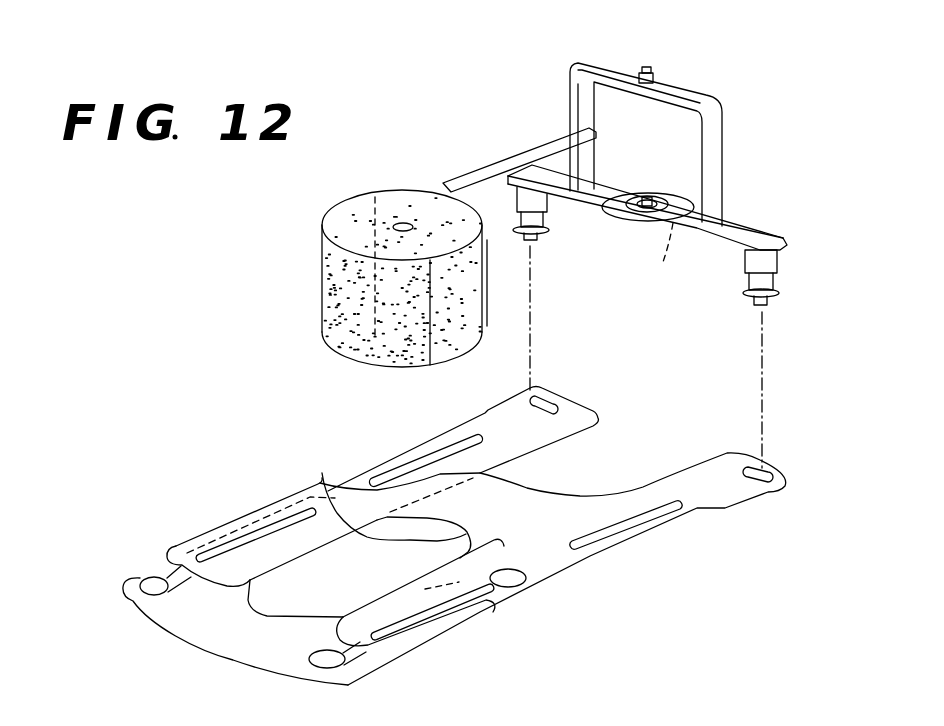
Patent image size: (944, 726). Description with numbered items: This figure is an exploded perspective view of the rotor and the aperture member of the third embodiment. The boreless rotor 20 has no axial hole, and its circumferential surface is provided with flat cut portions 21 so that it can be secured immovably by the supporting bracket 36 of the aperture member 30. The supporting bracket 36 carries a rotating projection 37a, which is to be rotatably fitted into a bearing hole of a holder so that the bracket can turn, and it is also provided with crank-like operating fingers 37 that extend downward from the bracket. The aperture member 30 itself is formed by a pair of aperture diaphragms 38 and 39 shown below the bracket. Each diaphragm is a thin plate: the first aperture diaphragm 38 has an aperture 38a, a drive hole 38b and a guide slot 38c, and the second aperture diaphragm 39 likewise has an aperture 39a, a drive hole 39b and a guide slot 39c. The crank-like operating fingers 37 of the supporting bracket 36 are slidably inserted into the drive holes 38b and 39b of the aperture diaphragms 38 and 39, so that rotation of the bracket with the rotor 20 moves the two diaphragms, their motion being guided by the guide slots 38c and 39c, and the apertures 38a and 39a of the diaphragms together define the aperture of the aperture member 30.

The boreless rotor 20 is at (338, 287).
The flat cut portions 21 is at (457, 338).
The aperture member 30 is at (680, 610).
The supporting bracket 36 is at (722, 152).
The crank-like operating fingers 37 is at (538, 218).
The rotating projection 37a is at (648, 67).
The aperture diaphragm 38 is at (594, 563).
The aperture 38a is at (322, 473).
The drive hole 38b is at (763, 478).
The guide slot 38c is at (607, 537).
The aperture diaphragm 39 is at (441, 648).
The aperture 39a is at (285, 600).
The drive hole 39b is at (557, 402).
The guide slot 39c is at (440, 450).